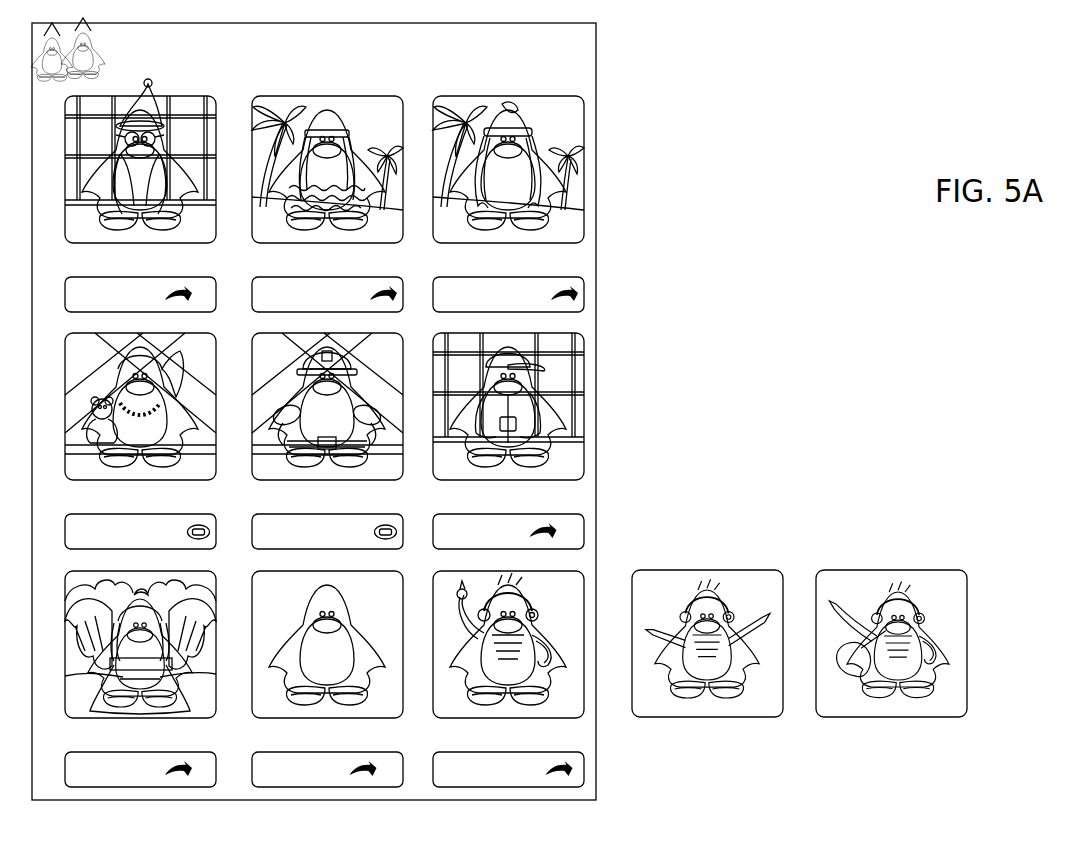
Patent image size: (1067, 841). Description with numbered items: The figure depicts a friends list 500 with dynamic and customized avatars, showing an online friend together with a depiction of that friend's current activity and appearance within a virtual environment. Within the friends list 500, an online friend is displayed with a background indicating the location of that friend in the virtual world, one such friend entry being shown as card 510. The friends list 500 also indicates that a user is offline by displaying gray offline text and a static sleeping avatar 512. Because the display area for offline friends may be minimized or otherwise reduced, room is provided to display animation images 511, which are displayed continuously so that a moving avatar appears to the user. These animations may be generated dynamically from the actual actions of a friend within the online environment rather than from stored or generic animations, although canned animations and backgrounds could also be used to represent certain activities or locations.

The friends list 500 is at (523, 68).
The friend card 510 is at (558, 142).
The animation images 511 is at (804, 670).
The static sleeping avatar 512 is at (390, 703).